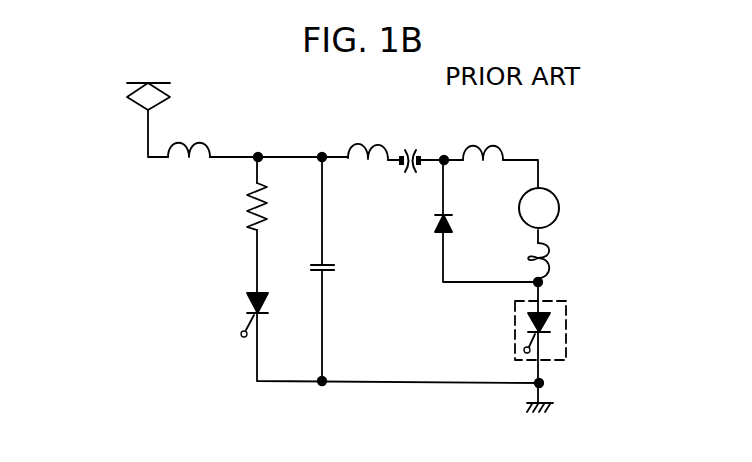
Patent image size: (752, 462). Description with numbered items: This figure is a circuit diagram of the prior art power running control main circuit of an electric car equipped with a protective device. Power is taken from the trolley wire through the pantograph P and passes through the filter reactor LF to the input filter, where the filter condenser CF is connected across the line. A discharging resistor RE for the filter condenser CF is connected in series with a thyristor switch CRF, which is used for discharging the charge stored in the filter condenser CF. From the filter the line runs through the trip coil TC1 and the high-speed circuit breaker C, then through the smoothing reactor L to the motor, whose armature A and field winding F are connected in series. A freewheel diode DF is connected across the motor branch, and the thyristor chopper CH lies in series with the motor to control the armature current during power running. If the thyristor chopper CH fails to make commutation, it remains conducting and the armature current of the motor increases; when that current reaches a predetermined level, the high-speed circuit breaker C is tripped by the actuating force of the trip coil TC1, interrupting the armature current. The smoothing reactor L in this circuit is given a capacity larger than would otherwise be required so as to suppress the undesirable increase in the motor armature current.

The pantograph P is at (120, 98).
The filter reactor LF is at (193, 145).
The discharging resistor RE is at (251, 213).
The thyristor switch CRF is at (246, 301).
The filter condenser CF is at (332, 260).
The trip coil TC1 is at (345, 145).
The high-speed circuit breaker C is at (423, 152).
The smoothing reactor L is at (493, 150).
The armature A is at (567, 209).
The freewheel diode DF is at (455, 229).
The field winding F is at (556, 262).
The thyristor chopper CH is at (567, 327).